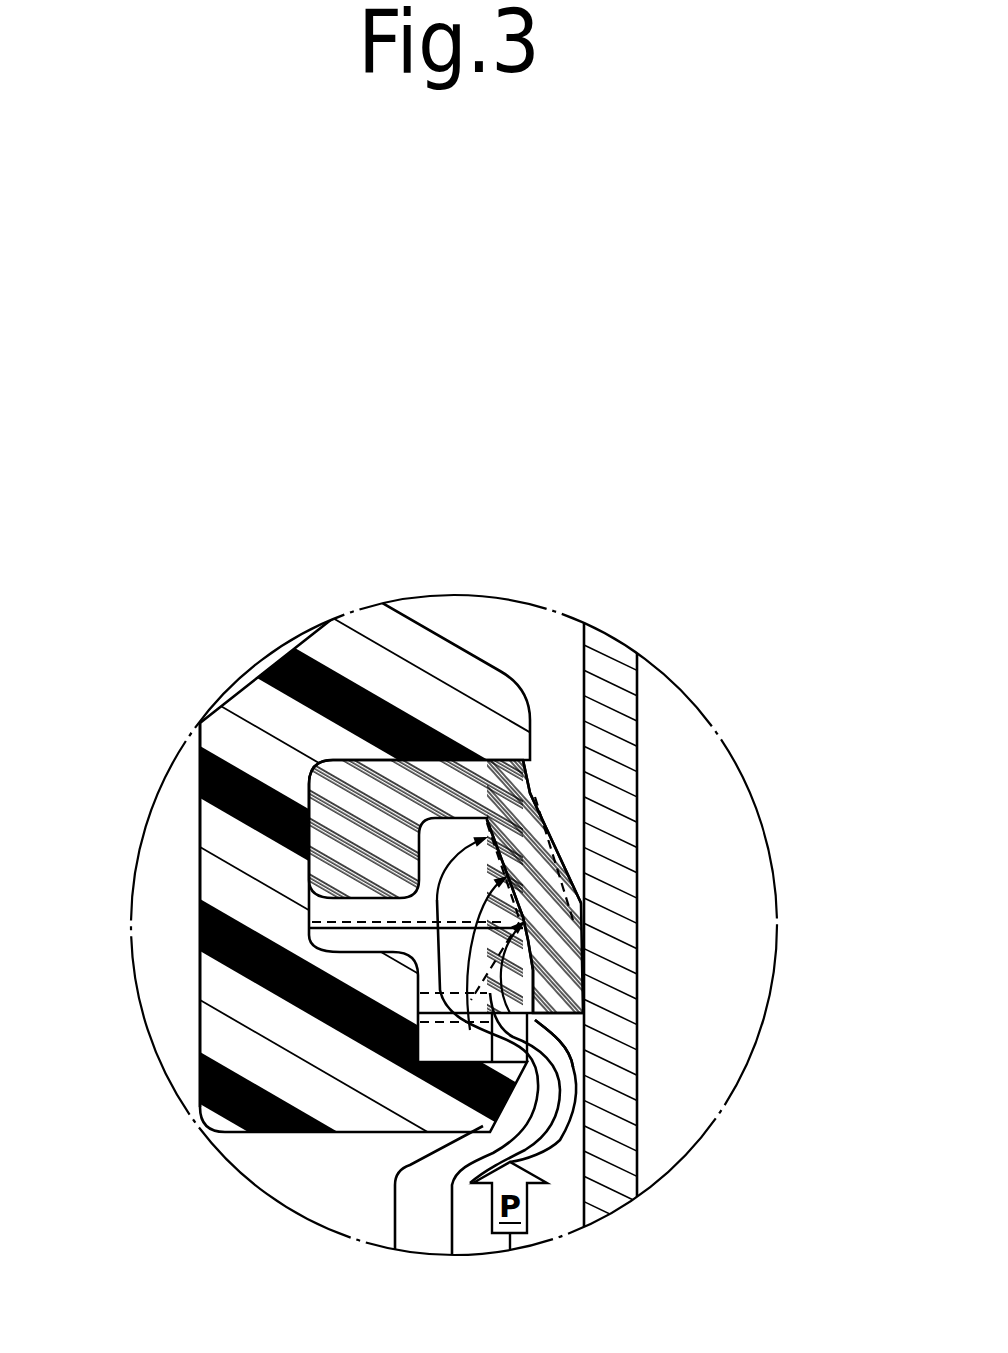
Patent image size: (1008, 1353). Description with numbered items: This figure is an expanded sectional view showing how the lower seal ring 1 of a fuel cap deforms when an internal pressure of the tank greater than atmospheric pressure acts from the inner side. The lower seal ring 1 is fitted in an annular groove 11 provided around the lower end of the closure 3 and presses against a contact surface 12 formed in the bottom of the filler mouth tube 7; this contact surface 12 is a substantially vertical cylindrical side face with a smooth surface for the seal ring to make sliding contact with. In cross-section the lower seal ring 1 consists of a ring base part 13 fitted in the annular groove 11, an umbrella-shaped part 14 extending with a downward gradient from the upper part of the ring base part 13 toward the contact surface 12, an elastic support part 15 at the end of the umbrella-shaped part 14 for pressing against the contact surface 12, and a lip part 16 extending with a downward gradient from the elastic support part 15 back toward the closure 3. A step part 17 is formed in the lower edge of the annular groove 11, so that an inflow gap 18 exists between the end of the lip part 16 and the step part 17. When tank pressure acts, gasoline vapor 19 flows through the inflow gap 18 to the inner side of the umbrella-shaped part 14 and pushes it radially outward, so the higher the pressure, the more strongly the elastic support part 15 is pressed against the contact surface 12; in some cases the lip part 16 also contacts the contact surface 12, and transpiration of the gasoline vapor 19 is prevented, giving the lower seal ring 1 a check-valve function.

The lower seal ring 1 is at (465, 924).
The closure 3 is at (178, 818).
The filler mouth tube 7 is at (637, 1122).
The annular groove 11 is at (305, 980).
The contact surface 12 is at (664, 1148).
The ring base part 13 is at (333, 860).
The umbrella-shaped part 14 is at (560, 848).
The elastic support part 15 is at (585, 933).
The lip part 16 is at (577, 1003).
The step part 17 is at (515, 1022).
The inflow gap 18 is at (548, 1037).
The gasoline vapor 19 is at (450, 1215).